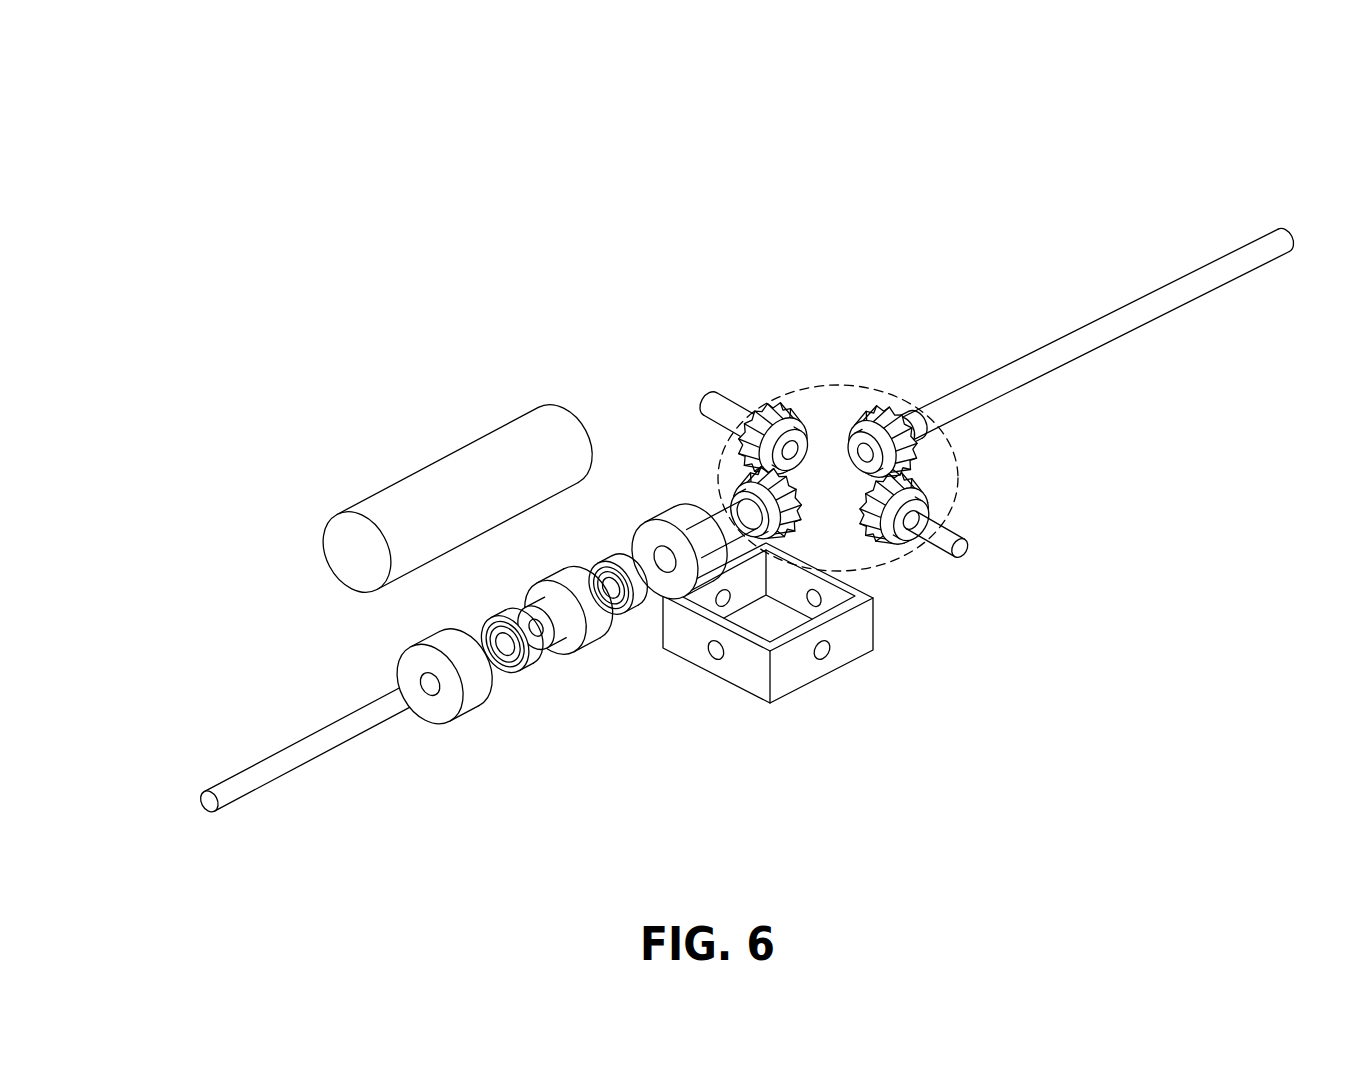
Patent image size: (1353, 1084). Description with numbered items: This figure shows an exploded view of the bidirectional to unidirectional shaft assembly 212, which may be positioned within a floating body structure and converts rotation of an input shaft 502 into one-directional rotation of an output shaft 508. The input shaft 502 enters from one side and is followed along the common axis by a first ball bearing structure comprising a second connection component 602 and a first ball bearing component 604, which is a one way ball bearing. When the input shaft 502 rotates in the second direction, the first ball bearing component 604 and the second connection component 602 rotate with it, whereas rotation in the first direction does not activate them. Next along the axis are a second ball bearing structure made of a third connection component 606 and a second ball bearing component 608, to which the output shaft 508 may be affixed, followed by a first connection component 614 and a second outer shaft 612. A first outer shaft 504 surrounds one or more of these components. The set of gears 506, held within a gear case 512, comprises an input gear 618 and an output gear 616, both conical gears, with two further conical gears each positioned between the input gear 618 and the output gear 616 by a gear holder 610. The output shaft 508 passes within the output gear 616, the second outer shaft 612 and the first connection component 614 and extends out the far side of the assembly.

The bidirectional to unidirectional shaft assembly 212 is at (217, 79).
The input shaft 502 is at (344, 720).
The first outer shaft 504 is at (456, 505).
The set of gears 506 is at (957, 466).
The output shaft 508 is at (1010, 373).
The gear case 512 is at (787, 650).
The second connection component 602 is at (470, 657).
The first ball bearing component 604 is at (525, 683).
The third connection component 606 is at (593, 632).
The second ball bearing component 608 is at (638, 590).
The gear holder 610 is at (940, 544).
The second outer shaft 612 is at (730, 515).
The first connection component 614 is at (683, 527).
The output gear 616 is at (875, 440).
The input gear 618 is at (797, 528).